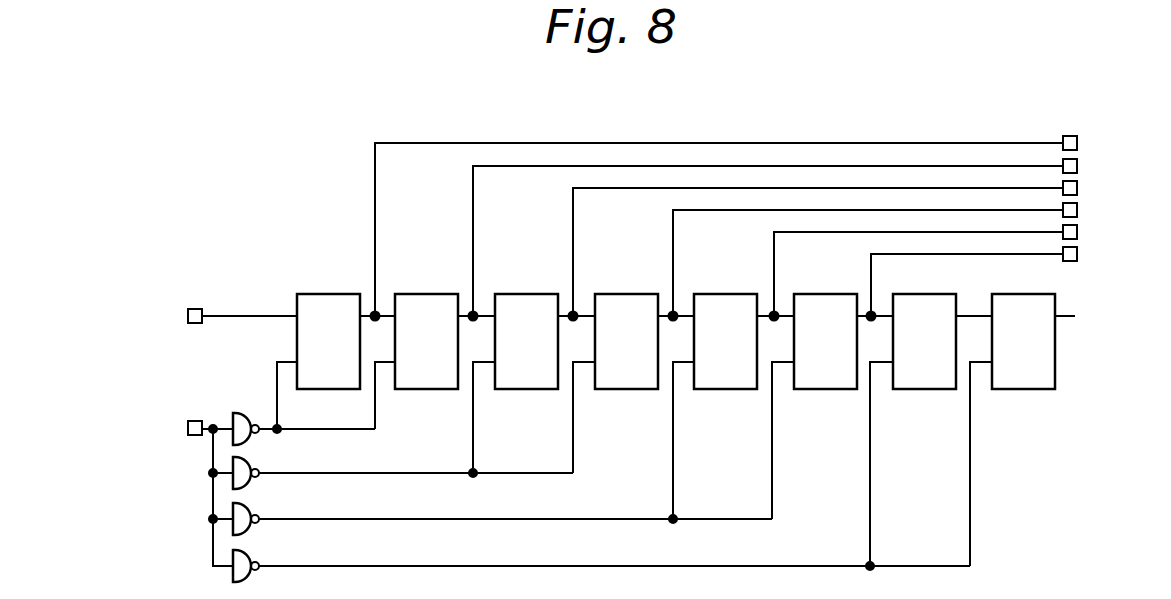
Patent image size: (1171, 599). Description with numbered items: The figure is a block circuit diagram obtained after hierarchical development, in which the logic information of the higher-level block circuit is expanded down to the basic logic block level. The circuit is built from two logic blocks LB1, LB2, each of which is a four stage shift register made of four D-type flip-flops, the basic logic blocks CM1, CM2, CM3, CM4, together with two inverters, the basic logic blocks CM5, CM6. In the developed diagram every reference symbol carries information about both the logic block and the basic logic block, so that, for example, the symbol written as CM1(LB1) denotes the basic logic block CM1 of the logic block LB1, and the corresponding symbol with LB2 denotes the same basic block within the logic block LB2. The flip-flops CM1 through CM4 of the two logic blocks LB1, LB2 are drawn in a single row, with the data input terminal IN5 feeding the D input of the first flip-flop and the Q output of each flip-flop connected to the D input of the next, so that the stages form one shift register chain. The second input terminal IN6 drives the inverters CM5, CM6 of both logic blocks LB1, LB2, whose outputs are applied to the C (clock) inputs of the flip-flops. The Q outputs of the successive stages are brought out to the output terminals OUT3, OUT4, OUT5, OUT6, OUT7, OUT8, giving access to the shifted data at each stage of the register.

The input terminal IN5 is at (219, 317).
The input terminal IN6 is at (185, 490).
The output terminal OUT3 is at (763, 222).
The output terminal OUT4 is at (812, 233).
The output terminal OUT5 is at (862, 244).
The output terminal OUT6 is at (912, 255).
The output terminal OUT7 is at (963, 266).
The output terminal OUT8 is at (1011, 277).
The basic logic block CM1 is at (728, 410).
The basic logic block CM2 is at (826, 410).
The basic logic block CM3 is at (925, 410).
The basic logic block CM4 is at (1024, 410).
The basic logic block CM5 is at (243, 445).
The basic logic block CM6 is at (243, 489).
The logic block LB1 is at (476, 395).
The logic block LB2 is at (667, 441).